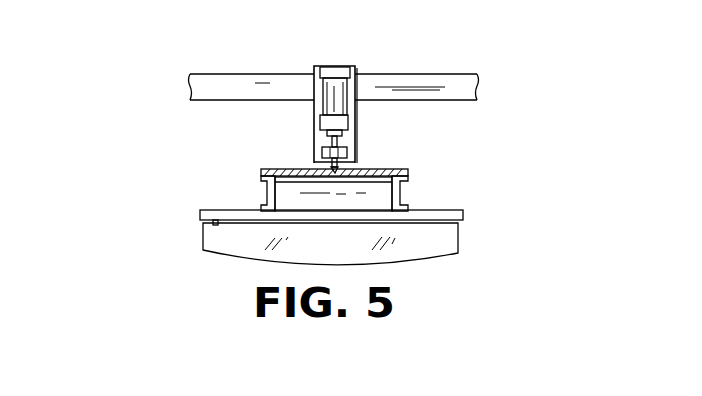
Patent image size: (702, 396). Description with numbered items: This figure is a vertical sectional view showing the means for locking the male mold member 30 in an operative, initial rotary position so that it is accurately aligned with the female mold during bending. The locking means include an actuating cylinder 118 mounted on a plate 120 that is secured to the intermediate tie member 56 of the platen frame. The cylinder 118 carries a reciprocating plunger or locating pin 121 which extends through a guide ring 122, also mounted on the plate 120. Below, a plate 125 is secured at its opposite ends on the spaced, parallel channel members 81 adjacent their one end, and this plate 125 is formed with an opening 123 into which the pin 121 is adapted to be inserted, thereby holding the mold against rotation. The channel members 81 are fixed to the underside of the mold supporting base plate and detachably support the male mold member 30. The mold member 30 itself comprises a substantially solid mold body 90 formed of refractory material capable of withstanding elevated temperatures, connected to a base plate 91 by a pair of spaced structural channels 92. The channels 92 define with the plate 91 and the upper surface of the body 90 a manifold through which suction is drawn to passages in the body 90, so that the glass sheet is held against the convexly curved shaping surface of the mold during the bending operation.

The male mold member 30 is at (208, 255).
The tie member 56 is at (200, 82).
The channel members 81 is at (261, 194).
The mold body 90 is at (432, 247).
The base plate 91 is at (461, 212).
The structural channels 92 is at (212, 230).
The actuating cylinder 118 is at (331, 94).
The plate 120 is at (316, 105).
The locating pin 121 is at (341, 139).
The guide ring 122 is at (322, 151).
The opening 123 is at (345, 166).
The plate 125 is at (262, 171).